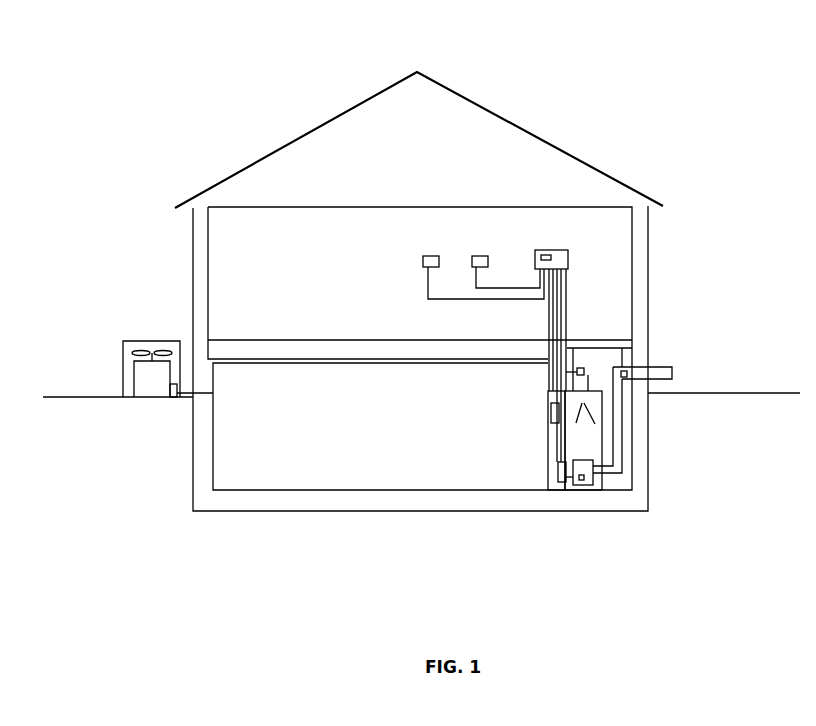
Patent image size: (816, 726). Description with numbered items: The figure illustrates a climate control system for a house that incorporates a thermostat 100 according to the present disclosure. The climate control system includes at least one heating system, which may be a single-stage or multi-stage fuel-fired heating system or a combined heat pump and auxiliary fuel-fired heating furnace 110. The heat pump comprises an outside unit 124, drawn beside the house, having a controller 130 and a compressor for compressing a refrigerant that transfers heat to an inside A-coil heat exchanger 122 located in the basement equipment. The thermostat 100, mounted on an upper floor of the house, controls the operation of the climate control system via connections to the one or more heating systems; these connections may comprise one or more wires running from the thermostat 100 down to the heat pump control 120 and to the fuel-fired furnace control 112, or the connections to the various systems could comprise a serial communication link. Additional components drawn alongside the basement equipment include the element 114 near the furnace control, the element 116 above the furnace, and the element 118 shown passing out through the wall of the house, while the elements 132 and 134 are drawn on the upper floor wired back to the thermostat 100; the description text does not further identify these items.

The thermostat 100 is at (535, 256).
The auxiliary fuel-fired heating furnace 110 is at (604, 480).
The fuel-fired furnace control 112 is at (562, 478).
The igniter / gas valve unit 114 is at (580, 483).
The sensor 116 is at (585, 369).
The exhaust vent 118 is at (630, 379).
The heat pump control 120 is at (548, 420).
The inside A-coil heat exchanger 122 is at (595, 420).
The outside unit 124 is at (134, 379).
The controller 130 is at (170, 398).
The thermostat 132 is at (472, 257).
The remote sensor 134 is at (423, 257).